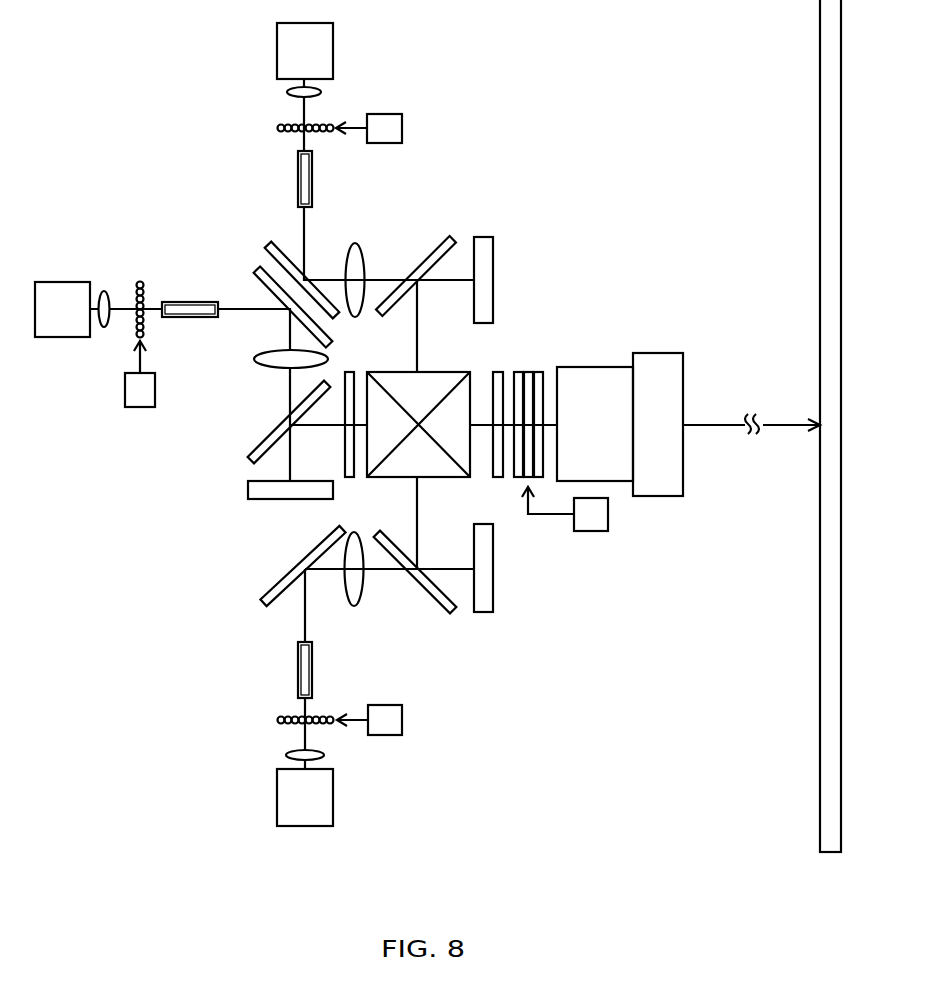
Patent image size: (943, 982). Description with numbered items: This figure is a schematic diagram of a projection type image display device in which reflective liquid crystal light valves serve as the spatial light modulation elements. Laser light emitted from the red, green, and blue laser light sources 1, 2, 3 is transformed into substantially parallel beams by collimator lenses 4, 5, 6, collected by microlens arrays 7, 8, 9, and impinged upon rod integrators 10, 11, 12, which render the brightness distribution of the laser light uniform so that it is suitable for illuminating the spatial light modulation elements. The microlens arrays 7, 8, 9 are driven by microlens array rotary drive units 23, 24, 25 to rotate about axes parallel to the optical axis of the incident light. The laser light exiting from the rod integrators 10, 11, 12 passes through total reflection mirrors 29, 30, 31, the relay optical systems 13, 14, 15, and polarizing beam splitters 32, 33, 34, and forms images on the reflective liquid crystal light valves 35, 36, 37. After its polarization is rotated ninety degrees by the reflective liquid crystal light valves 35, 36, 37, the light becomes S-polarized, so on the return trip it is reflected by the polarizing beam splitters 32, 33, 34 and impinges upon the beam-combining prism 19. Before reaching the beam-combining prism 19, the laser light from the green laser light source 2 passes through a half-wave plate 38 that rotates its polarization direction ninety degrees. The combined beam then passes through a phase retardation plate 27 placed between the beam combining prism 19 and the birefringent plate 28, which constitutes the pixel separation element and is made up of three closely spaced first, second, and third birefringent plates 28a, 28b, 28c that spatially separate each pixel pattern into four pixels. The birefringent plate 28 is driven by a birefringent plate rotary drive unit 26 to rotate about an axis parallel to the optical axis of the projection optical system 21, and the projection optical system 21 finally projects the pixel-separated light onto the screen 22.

The red laser light source 1 is at (333, 797).
The green laser light source 2 is at (62, 337).
The blue laser light source 3 is at (333, 50).
The collimator lens 4 is at (324, 755).
The collimator lens 5 is at (104, 327).
The collimator lens 6 is at (321, 92).
The microlens array 7 is at (279, 720).
The microlens array 8 is at (140, 282).
The microlens array 9 is at (277, 128).
The rod integrator 10 is at (312, 676).
The rod integrator 11 is at (190, 317).
The rod integrator 12 is at (312, 168).
The relay optical system 13 is at (354, 606).
The relay optical system 14 is at (257, 361).
The relay optical system 15 is at (355, 243).
The beam combining prism 19 is at (443, 372).
The projection optical system 21 is at (612, 367).
The screen 22 is at (818, 210).
The microlens array rotary drive unit 23 is at (402, 720).
The microlens array rotary drive unit 24 is at (140, 407).
The microlens array rotary drive unit 25 is at (402, 128).
The birefringent plate rotary drive unit 26 is at (593, 531).
The phase retardation plate 27 is at (499, 372).
The birefringent plate 28 is at (556, 364).
The first birefringent plate 28a is at (518, 372).
The second birefringent plate 28b is at (528, 372).
The third birefringent plate 28c is at (539, 372).
The total reflection mirror 29 is at (279, 575).
The total reflection mirror 30 is at (257, 268).
The total reflection mirror 31 is at (265, 247).
The polarizing beam splitter 32 is at (432, 604).
The polarizing beam splitter 33 is at (267, 428).
The polarizing beam splitter 34 is at (436, 244).
The reflective liquid crystal light valve 35 is at (483, 612).
The reflective liquid crystal light valve 36 is at (248, 490).
The reflective liquid crystal light valve 37 is at (483, 237).
The half-wave plate 38 is at (349, 477).